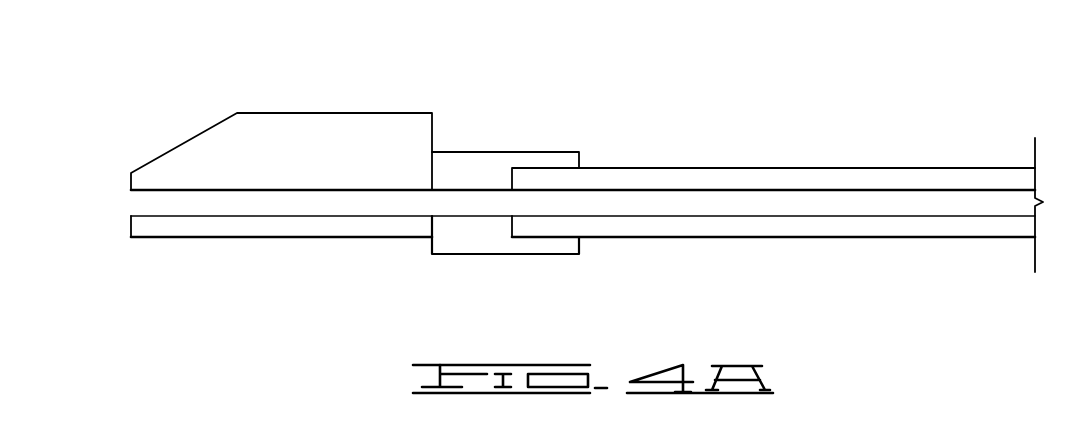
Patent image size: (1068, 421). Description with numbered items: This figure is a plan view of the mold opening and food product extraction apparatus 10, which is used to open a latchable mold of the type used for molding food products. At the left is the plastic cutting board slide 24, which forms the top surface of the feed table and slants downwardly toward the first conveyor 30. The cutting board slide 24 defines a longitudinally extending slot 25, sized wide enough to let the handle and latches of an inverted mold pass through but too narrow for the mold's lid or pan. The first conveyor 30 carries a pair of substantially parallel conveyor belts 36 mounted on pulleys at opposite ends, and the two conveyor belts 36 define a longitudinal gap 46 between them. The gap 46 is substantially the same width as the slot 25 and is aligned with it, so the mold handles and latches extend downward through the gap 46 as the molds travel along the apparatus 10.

The mold opening and food product extraction apparatus 10 is at (812, 120).
The cutting board slide 24 is at (297, 133).
The slot 25 is at (257, 208).
The first conveyor 30 is at (632, 237).
The conveyor belts 36 is at (647, 175).
The longitudinal gap 46 is at (860, 208).